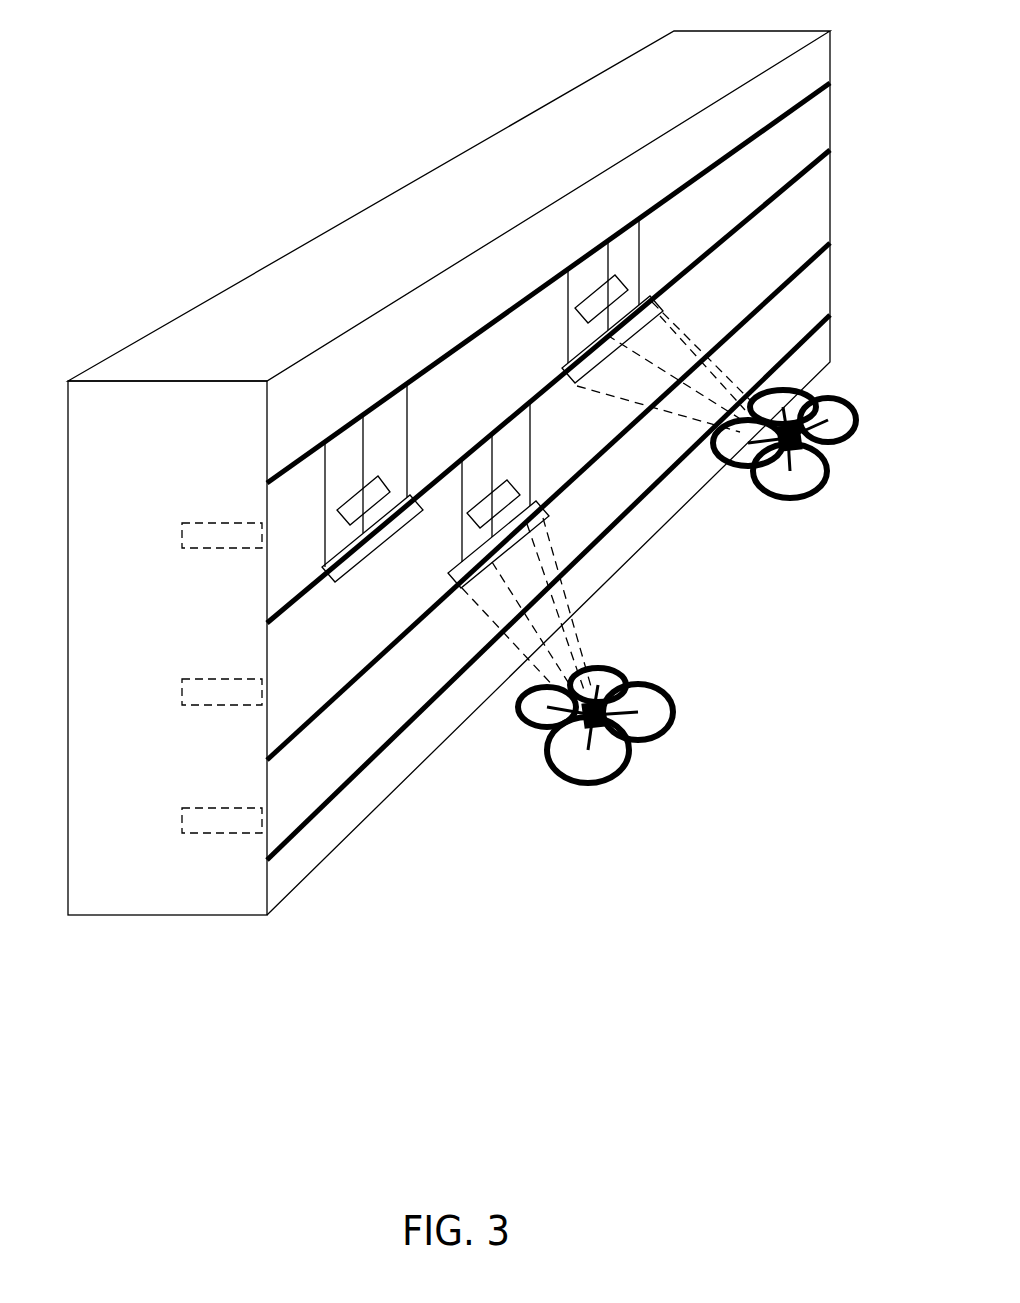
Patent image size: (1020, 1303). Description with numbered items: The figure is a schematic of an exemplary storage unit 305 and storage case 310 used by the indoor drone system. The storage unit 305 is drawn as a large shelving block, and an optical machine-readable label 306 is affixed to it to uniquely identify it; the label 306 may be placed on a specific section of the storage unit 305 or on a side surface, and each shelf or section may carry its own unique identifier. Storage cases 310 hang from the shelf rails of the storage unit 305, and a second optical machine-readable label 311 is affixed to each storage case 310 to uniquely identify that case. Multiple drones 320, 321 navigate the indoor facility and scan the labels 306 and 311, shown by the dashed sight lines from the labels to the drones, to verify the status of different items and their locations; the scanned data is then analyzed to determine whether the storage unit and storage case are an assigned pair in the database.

The storage unit 305 is at (665, 476).
The optical machine-readable label 306 is at (350, 574).
The storage case 310 is at (530, 458).
The second optical machine-readable label 311 is at (378, 506).
The drone 320 is at (623, 770).
The drone 321 is at (805, 490).